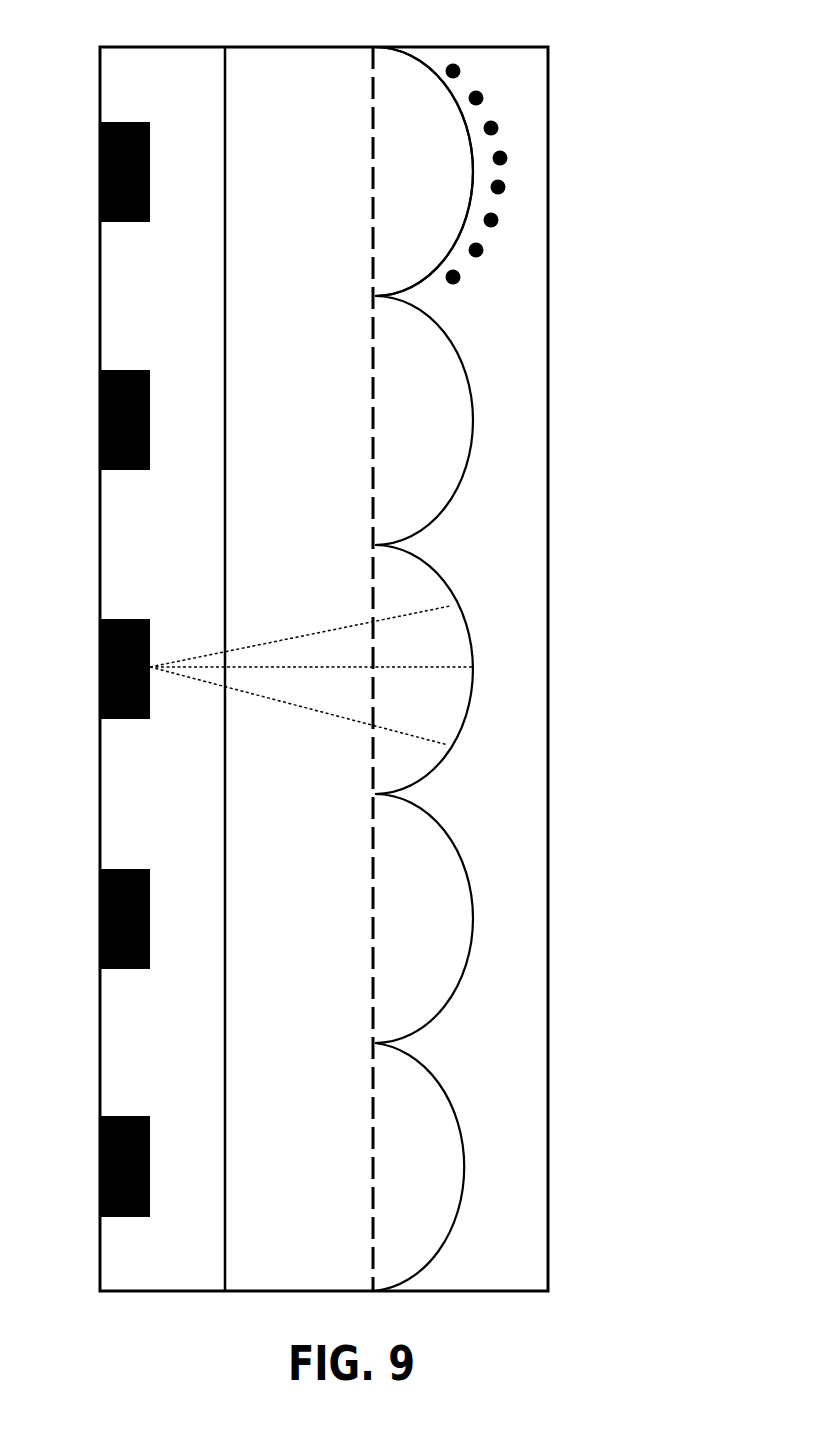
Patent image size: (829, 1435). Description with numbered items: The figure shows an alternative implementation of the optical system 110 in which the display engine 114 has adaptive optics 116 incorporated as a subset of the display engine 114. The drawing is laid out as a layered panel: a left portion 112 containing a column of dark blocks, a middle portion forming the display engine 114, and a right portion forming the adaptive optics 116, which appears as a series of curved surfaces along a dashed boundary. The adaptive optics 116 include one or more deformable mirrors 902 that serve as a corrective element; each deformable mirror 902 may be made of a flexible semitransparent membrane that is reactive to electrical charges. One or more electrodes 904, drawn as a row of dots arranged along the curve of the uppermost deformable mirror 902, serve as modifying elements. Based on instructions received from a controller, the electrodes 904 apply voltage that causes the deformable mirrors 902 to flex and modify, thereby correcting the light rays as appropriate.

The optical system 110 is at (623, 88).
The light source layer 112 is at (148, 47).
The display engine 114 is at (283, 47).
The adaptive optics 116 is at (462, 47).
The deformable mirror 902 is at (472, 193).
The electrode 904 is at (460, 278).